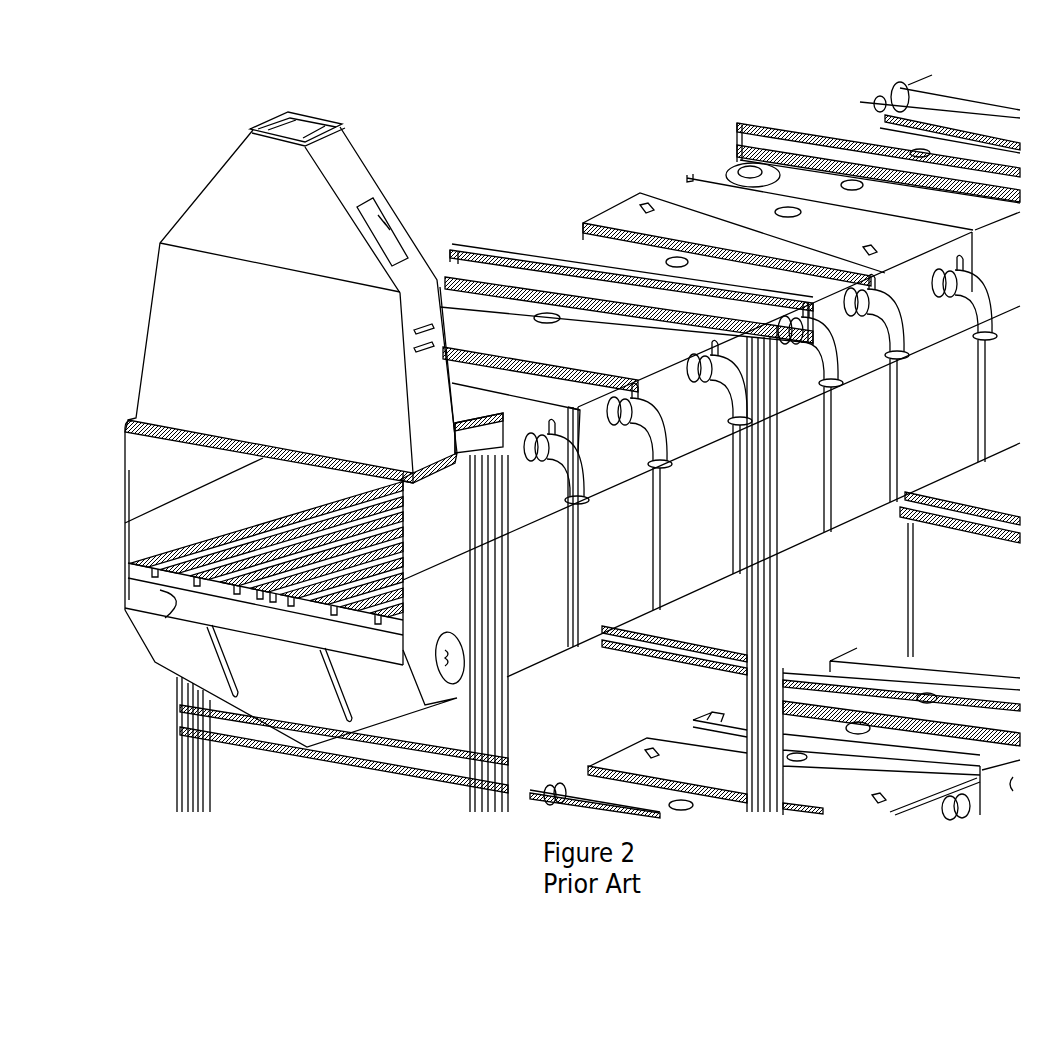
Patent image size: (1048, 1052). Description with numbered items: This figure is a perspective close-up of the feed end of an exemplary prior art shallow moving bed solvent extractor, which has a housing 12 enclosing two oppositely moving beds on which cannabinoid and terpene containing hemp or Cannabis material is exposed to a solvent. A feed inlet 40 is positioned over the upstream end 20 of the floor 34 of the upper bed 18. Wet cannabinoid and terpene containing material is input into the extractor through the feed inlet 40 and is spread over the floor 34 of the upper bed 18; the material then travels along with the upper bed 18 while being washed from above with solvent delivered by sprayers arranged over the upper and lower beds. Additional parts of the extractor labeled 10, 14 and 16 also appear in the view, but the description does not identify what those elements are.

The conveyor system 10 is at (483, 98).
The housing 12 is at (724, 192).
The frame post 14 is at (777, 612).
The lower rail 16 is at (653, 640).
The upper bed 18 is at (676, 192).
The upstream end 20 is at (208, 606).
The floor 34 is at (210, 563).
The feed inlet 40 is at (215, 183).